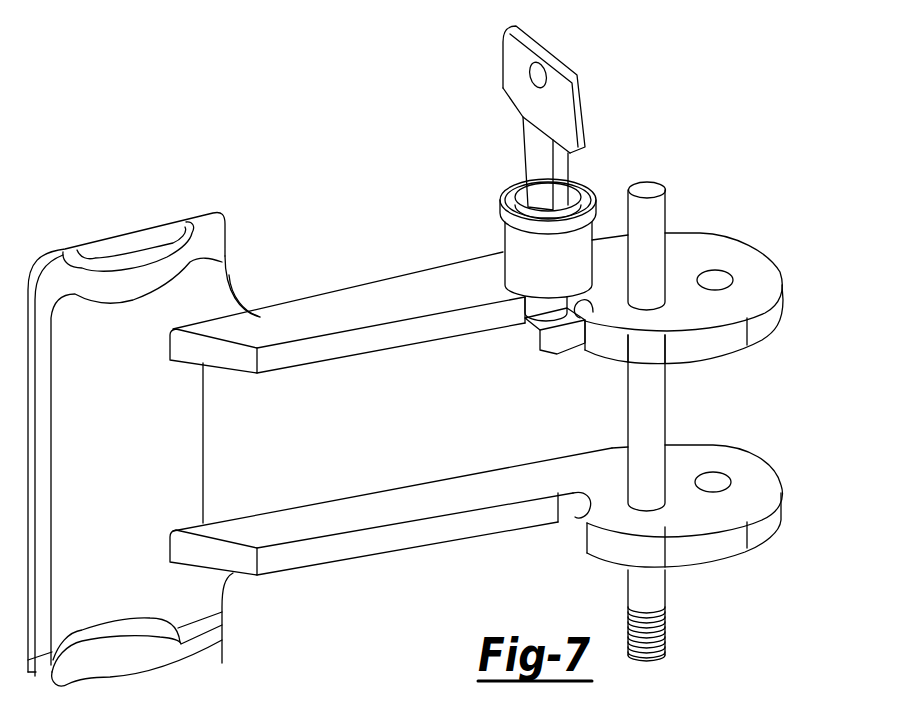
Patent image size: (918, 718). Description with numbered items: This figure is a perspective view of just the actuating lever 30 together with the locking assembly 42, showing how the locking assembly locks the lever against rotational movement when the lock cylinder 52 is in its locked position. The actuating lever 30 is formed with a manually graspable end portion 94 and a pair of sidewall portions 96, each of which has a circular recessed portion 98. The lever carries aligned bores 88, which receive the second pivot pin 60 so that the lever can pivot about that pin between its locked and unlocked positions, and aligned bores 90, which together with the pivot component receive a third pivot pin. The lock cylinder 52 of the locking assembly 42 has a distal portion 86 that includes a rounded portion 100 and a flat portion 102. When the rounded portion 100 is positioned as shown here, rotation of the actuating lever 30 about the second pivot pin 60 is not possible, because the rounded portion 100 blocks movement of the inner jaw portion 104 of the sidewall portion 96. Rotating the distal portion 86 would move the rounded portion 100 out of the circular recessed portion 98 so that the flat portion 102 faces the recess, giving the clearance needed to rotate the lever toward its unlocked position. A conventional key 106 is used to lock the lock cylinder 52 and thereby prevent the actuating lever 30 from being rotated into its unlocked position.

The actuating lever 30 is at (257, 283).
The locking assembly 42 is at (486, 179).
The lock cylinder 52 is at (515, 249).
The second pivot pin 60 is at (648, 192).
The distal portion 86 is at (543, 308).
The aligned bores 88 is at (652, 306).
The aligned bores 90 is at (715, 283).
The manually graspable end portion 94 is at (103, 580).
The sidewall portions 96 is at (353, 303).
The circular recessed portion 98 is at (595, 298).
The rounded portion 100 is at (552, 345).
The flat portion 102 is at (527, 322).
The inner jaw portion 104 is at (628, 335).
The key 106 is at (578, 84).